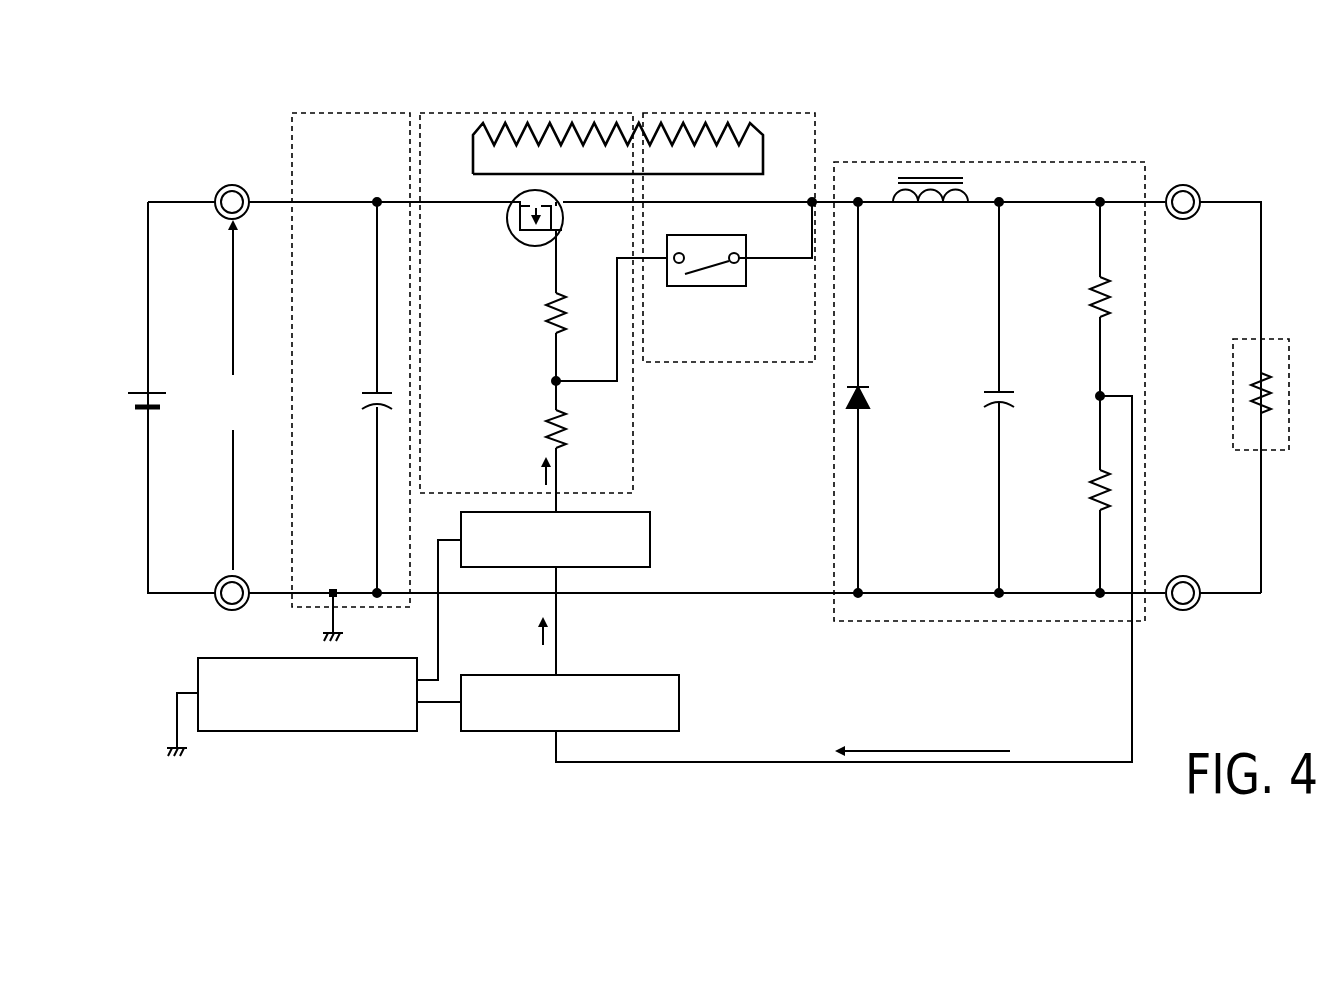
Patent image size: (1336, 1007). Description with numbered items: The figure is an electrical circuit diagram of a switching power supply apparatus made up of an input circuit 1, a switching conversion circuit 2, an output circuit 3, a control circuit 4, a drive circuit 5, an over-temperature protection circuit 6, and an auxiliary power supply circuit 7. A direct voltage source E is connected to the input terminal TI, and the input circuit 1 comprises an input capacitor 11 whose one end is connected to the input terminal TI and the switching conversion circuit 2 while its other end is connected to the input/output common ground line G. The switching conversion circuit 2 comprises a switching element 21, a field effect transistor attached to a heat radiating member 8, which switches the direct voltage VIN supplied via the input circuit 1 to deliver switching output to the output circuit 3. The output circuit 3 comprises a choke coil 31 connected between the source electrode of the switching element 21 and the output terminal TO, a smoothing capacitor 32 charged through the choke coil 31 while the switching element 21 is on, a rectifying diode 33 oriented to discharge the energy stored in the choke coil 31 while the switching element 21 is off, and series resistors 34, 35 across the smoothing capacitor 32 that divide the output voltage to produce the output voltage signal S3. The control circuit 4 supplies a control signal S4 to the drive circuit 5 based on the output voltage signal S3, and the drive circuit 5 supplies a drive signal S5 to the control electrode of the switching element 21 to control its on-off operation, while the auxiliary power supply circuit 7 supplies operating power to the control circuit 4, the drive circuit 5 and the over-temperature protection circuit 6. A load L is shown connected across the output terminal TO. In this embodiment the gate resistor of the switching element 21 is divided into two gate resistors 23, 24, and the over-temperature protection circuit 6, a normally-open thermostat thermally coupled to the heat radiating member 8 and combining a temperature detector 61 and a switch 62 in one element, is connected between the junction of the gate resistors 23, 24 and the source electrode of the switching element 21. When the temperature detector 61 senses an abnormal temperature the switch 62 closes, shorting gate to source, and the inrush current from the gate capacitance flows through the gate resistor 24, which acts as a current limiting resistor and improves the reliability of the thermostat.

The input circuit 1 is at (351, 349).
The switching conversion circuit 2 is at (451, 113).
The output circuit 3 is at (997, 162).
The control circuit 4 is at (679, 705).
The drive circuit 5 is at (650, 543).
The over-temperature protection circuit 6 is at (729, 237).
The temperature detector 61 is at (679, 258).
The switch 62 is at (734, 258).
The auxiliary power supply circuit 7 is at (300, 731).
The heat radiating member 8 is at (473, 155).
The input capacitor 11 is at (364, 395).
The switching element 21 is at (507, 222).
The gate resistor 23 is at (545, 419).
The gate resistor 24 is at (545, 312).
The choke coil 31 is at (928, 210).
The smoothing capacitor 32 is at (1008, 400).
The rectifying diode 33 is at (870, 396).
The resistor 34 is at (1090, 299).
The resistor 35 is at (1088, 492).
The direct voltage source E is at (130, 396).
The load L is at (1238, 339).
The input terminal TI is at (232, 185).
The output terminal TO is at (1183, 185).
The direct voltage VIN is at (233, 397).
The input/output common ground line G is at (747, 595).
The output voltage signal S3 is at (930, 751).
The control signal S4 is at (540, 632).
The drive signal S5 is at (542, 470).